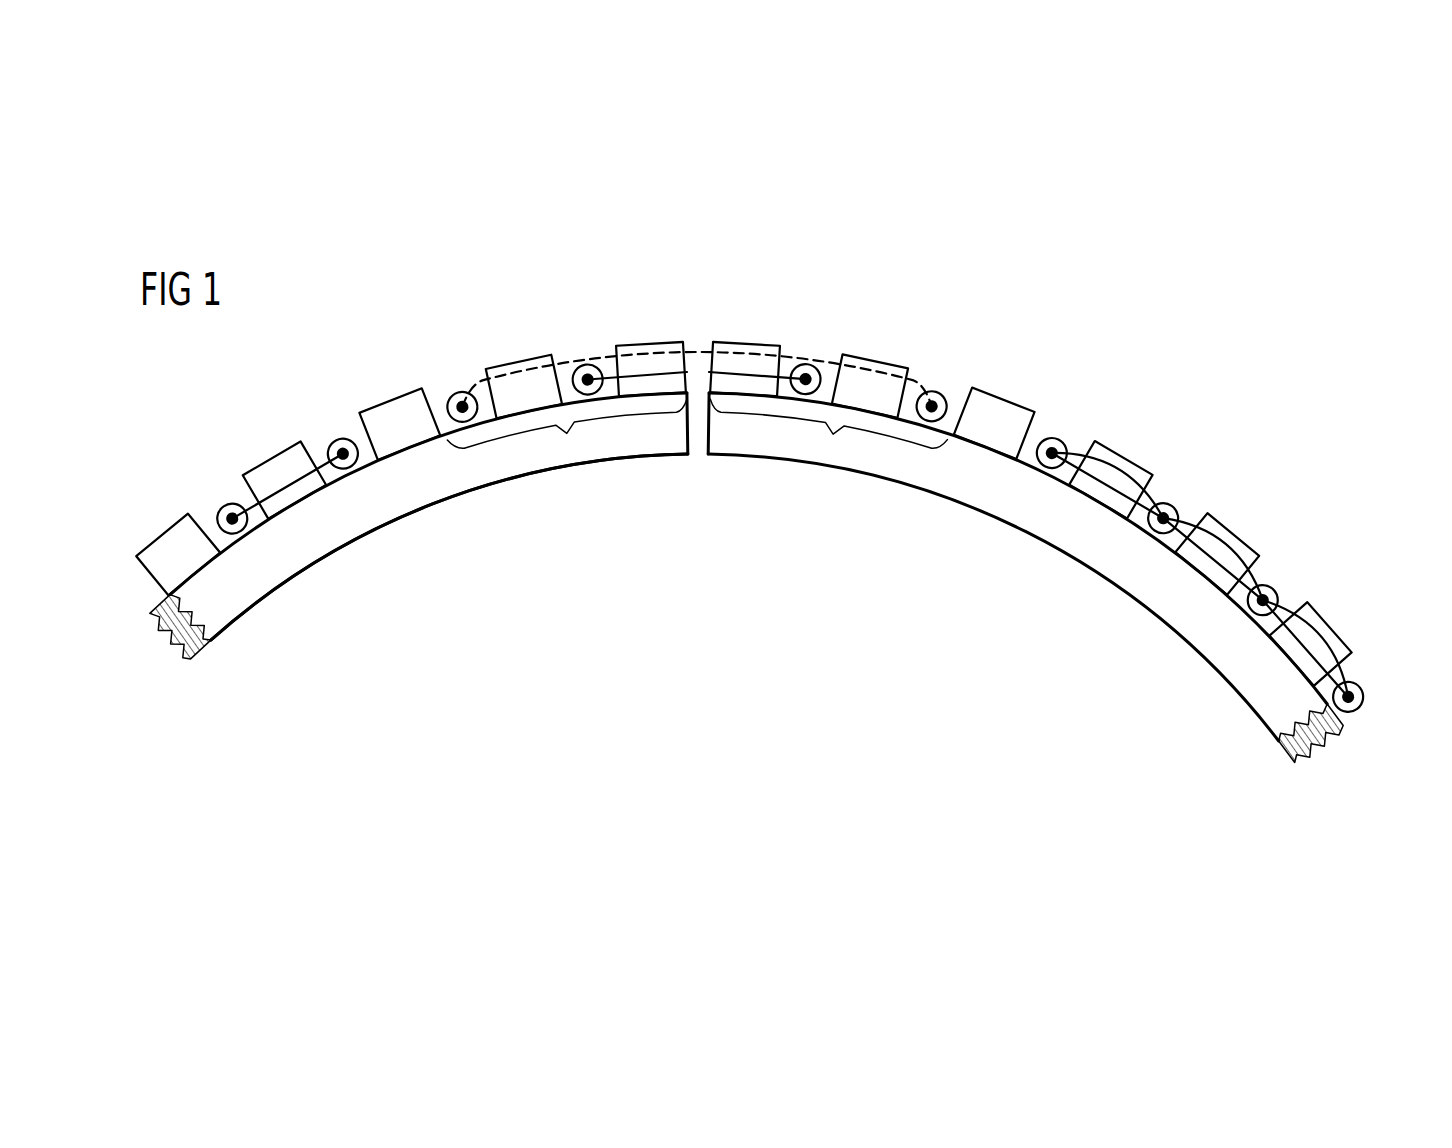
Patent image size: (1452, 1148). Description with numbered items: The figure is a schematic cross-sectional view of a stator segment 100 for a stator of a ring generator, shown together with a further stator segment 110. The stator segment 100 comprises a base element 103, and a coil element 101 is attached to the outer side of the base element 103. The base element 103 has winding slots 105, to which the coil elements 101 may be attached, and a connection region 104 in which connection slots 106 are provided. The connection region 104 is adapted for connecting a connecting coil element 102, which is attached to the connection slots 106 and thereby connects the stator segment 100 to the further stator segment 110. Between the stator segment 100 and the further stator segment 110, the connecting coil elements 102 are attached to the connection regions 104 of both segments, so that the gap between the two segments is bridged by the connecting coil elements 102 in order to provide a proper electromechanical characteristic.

The stator segment 100 is at (1047, 555).
The coil element 101 is at (220, 516).
The connecting coil element 102 is at (699, 466).
The base element 103 is at (372, 447).
The connection region 104 is at (697, 431).
The winding slot 105 is at (226, 502).
The connection slot 106 is at (457, 387).
The further stator segment 110 is at (345, 558).